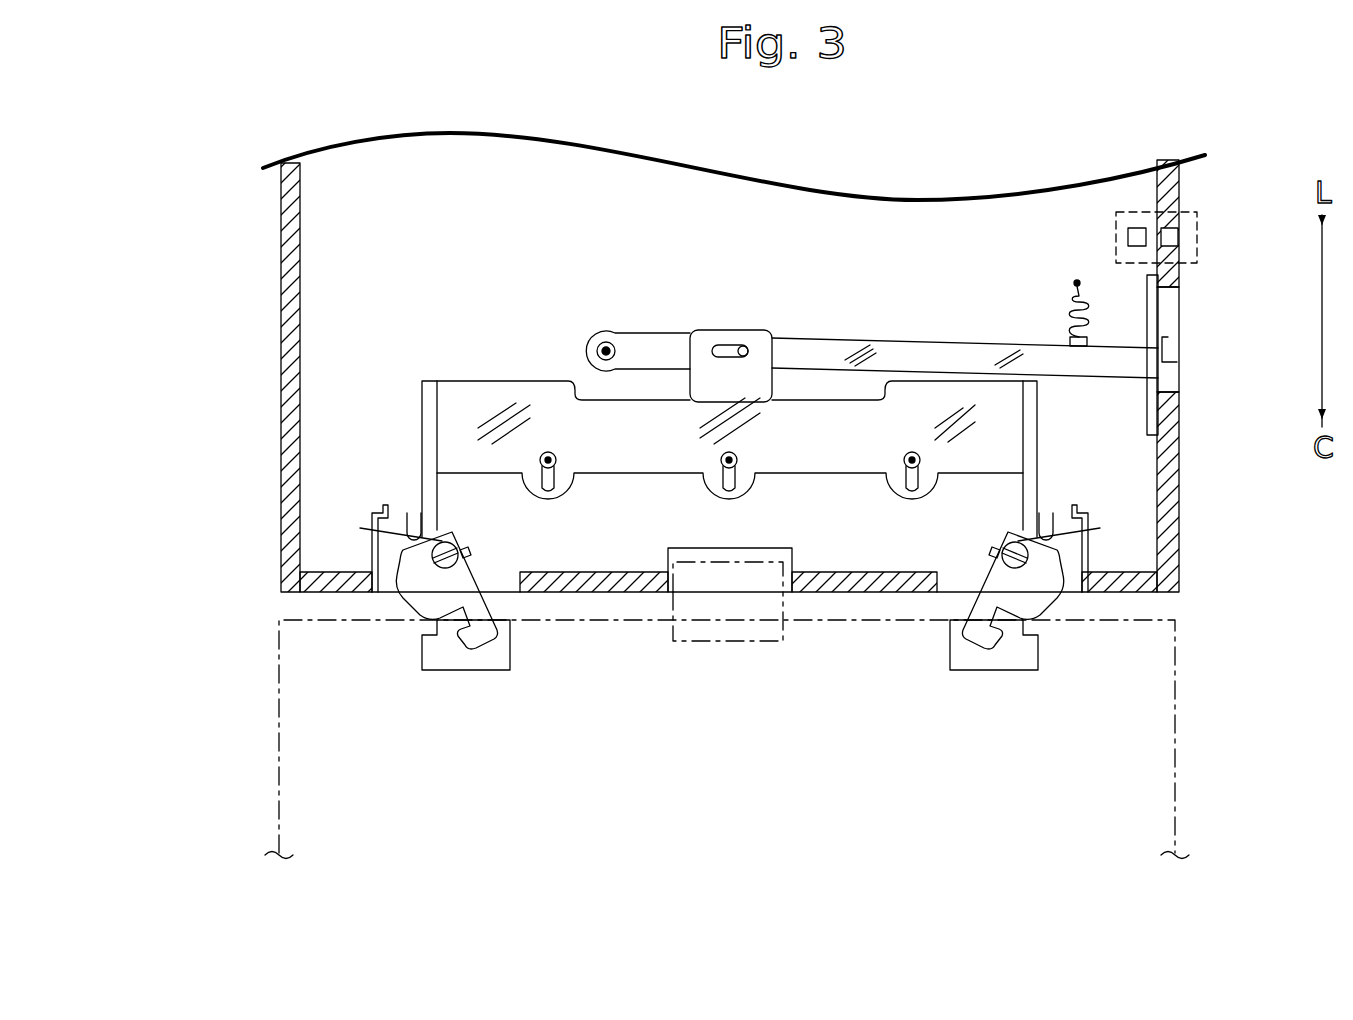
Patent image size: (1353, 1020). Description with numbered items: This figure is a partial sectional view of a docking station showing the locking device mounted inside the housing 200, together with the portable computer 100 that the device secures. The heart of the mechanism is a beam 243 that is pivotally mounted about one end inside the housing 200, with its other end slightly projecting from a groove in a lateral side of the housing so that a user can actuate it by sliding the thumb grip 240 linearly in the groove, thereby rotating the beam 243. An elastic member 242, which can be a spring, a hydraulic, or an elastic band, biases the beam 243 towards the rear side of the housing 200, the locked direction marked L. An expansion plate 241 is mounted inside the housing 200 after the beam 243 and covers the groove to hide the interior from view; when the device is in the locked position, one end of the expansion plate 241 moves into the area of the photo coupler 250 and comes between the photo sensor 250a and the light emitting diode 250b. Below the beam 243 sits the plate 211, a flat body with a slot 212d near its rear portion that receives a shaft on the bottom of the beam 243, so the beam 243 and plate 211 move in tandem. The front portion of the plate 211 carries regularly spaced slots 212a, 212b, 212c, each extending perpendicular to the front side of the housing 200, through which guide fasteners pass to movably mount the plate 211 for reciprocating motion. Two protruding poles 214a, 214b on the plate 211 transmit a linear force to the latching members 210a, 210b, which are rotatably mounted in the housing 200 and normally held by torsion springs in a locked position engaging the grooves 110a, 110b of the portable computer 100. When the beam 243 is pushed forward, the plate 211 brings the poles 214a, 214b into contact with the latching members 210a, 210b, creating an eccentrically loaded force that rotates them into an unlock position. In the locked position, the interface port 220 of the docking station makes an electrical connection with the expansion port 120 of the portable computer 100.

The portable computer 100 is at (262, 710).
The groove 110a is at (986, 672).
The groove 110b is at (487, 672).
The expansion port 120 is at (722, 645).
The housing 200 is at (268, 471).
The latching member 210a is at (1037, 590).
The latching member 210b is at (423, 585).
The plate 211 is at (500, 385).
The slot 212a is at (548, 497).
The slot 212b is at (727, 497).
The slot 212c is at (912, 497).
The slot 212d is at (726, 346).
The protruding pole 214a is at (1050, 516).
The protruding pole 214b is at (410, 516).
The interface port 220 is at (776, 548).
The thumb grip 240 is at (1172, 380).
The expansion plate 241 is at (1153, 313).
The elastic member 242 is at (1075, 308).
The beam 243 is at (812, 343).
The photo coupler 250 is at (1195, 212).
The photo sensor 250a is at (1130, 237).
The light emitting diode 250b is at (1172, 237).